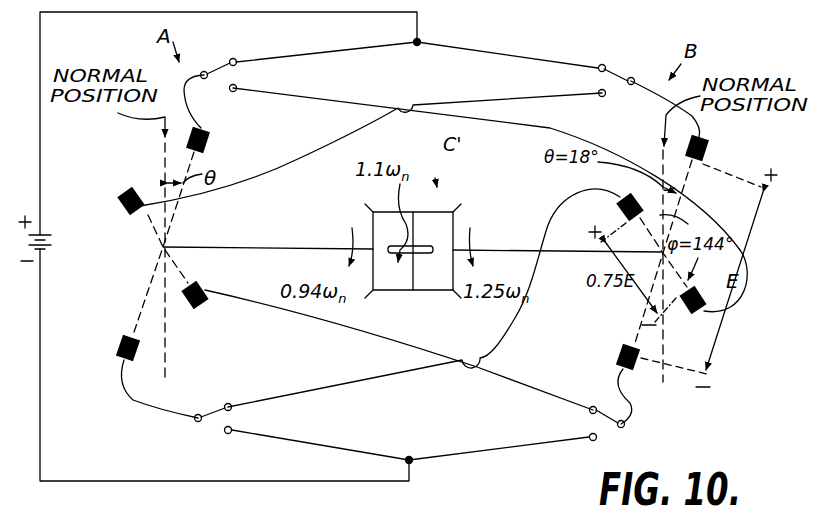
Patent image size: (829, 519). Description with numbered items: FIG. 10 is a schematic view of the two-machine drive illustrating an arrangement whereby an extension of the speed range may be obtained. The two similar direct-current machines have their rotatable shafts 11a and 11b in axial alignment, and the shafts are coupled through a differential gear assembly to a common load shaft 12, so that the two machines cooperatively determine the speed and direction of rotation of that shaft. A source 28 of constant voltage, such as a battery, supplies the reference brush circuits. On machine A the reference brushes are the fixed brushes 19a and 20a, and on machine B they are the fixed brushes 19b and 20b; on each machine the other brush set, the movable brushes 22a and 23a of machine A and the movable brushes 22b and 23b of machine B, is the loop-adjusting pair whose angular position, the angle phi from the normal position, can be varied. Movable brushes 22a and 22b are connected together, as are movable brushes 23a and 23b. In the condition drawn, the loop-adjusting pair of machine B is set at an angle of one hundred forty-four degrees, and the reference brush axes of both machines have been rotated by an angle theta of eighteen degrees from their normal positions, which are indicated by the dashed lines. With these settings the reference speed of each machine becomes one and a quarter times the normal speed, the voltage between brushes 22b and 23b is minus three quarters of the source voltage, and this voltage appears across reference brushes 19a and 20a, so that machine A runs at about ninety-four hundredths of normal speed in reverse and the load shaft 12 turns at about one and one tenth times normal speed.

The rotatable shaft 11a is at (268, 248).
The rotatable shaft 11b is at (496, 250).
The common load shaft 12 is at (422, 247).
The fixed brush 19a is at (210, 140).
The fixed brush 19b is at (710, 148).
The fixed brush 20a is at (117, 348).
The fixed brush 20b is at (617, 358).
The movable brush 22a is at (150, 181).
The movable brush 22b is at (690, 314).
The movable brush 23a is at (207, 300).
The movable brush 23b is at (628, 194).
The source of constant voltage 28 is at (52, 241).